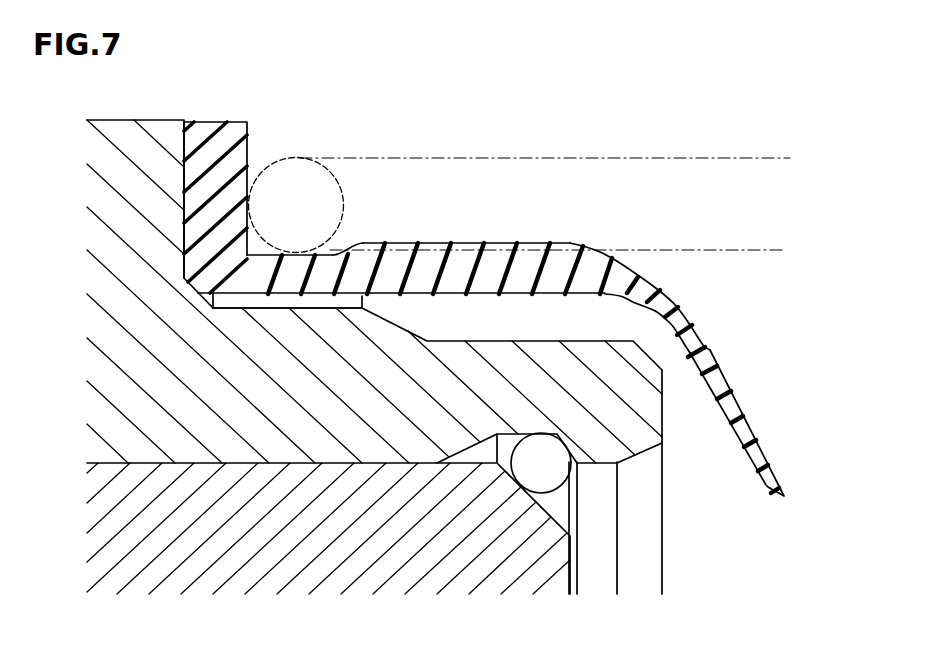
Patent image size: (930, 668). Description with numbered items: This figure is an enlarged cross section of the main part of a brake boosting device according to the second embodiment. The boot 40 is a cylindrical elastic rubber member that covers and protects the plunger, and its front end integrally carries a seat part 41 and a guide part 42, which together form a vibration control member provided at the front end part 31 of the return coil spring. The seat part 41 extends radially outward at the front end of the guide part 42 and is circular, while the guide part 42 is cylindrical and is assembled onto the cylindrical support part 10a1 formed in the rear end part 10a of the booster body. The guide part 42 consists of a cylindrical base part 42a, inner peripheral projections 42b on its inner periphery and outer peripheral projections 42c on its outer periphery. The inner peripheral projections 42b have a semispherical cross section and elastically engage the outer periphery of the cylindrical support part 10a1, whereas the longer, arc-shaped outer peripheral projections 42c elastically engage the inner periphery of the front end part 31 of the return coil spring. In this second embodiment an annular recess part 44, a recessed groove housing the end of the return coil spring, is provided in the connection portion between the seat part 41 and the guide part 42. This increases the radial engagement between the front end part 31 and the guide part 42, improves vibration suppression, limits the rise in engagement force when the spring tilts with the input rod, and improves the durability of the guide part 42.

The rear end part 10a is at (127, 133).
The cylindrical support part 10a1 is at (265, 314).
The seat part 41 is at (213, 128).
The guide part 42 is at (454, 278).
The cylindrical base part 42a is at (392, 292).
The inner peripheral projections 42b is at (277, 300).
The outer peripheral projections 42c is at (500, 242).
The annular recess part 44 is at (337, 251).
The boot 40 is at (700, 328).
The front end part 31 is at (301, 162).